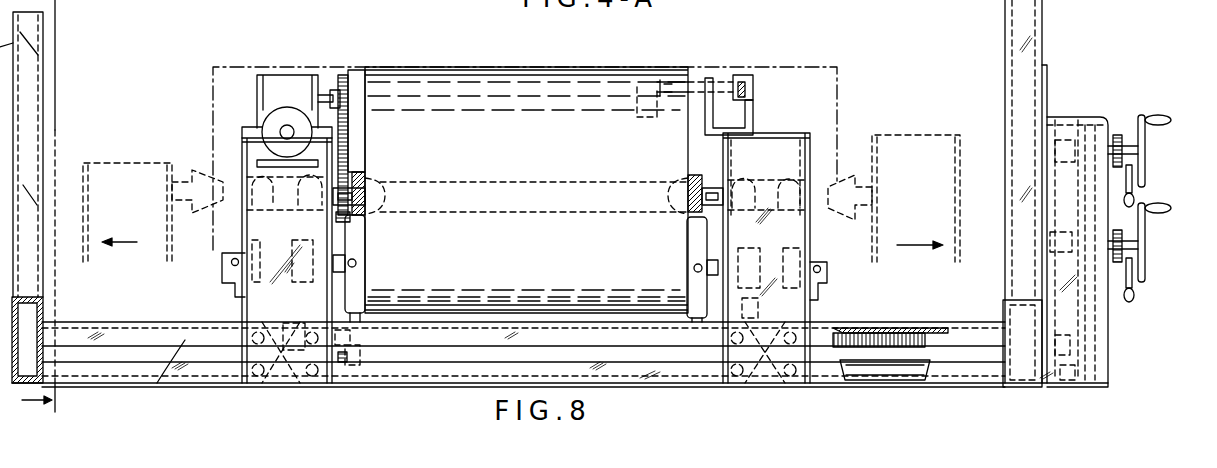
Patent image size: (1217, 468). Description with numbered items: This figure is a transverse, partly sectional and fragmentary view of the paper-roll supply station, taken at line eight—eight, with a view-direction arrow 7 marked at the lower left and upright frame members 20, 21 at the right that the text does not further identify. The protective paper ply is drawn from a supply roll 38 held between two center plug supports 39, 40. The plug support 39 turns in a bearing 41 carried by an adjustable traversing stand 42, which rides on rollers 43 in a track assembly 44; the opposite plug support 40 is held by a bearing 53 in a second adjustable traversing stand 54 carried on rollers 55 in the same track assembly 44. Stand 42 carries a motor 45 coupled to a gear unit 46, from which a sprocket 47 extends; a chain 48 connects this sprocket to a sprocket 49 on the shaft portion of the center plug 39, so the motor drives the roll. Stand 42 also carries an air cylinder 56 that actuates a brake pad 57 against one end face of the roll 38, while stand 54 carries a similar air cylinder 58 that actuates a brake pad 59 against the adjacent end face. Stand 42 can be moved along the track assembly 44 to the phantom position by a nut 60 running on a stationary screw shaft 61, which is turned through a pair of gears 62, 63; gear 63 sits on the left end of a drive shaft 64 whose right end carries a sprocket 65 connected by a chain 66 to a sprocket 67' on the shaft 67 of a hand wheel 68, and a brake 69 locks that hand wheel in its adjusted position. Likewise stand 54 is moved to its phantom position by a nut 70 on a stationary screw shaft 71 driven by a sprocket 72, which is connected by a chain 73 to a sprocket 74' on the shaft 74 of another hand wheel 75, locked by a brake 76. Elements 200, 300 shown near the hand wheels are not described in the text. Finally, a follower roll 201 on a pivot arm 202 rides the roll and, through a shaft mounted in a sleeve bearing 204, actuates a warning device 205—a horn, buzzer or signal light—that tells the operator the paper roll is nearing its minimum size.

The section line indicator 7 is at (28, 396).
The upright post 20 is at (1043, 26).
The plate 21 is at (1044, 84).
The supply roll 38 is at (465, 68).
The center plug support 39 is at (360, 175).
The center plug support 40 is at (688, 177).
The bearing 41 is at (366, 159).
The adjustable traversing stand 42 is at (173, 246).
The rollers 43 is at (283, 382).
The track assembly 44 is at (143, 373).
The motor 45 is at (272, 118).
The gear unit 46 is at (284, 77).
The sprocket 47 is at (345, 80).
The chain 48 is at (348, 135).
The sprocket 49 is at (336, 212).
The bearing 53 is at (751, 186).
The adjustable traversing stand 54 is at (813, 240).
The rollers 55 is at (758, 383).
The air cylinder 56 is at (230, 303).
The brake pad 57 is at (367, 248).
The air cylinder 58 is at (778, 250).
The brake pad 59 is at (687, 243).
The nut 60 is at (298, 272).
The stationary screw shaft 61 is at (143, 327).
The gear 62 is at (377, 292).
The gear 63 is at (348, 360).
The drive shaft 64 is at (420, 372).
The sprocket 65 is at (1108, 382).
The chain 66 is at (1108, 322).
The shaft 67 is at (1067, 100).
The sprocket 67' is at (1107, 99).
The hand wheel 68 is at (1134, 120).
The brake 69 is at (1135, 198).
The nut 70 is at (765, 322).
The stationary screw shaft 71 is at (880, 338).
The sprocket 72 is at (1108, 357).
The chain 73 is at (1037, 278).
The shaft 74 is at (1062, 206).
The sprocket 74' is at (1000, 222).
The hand wheel 75 is at (1145, 278).
The brake 76 is at (1133, 297).
The adjusting screw 200 is at (813, 315).
The follower roll 201 is at (657, 108).
The pivot arm 202 is at (664, 88).
The sleeve bearing 204 is at (673, 100).
The warning device 205 is at (748, 94).
The adjusting screw 300 is at (1147, 163).